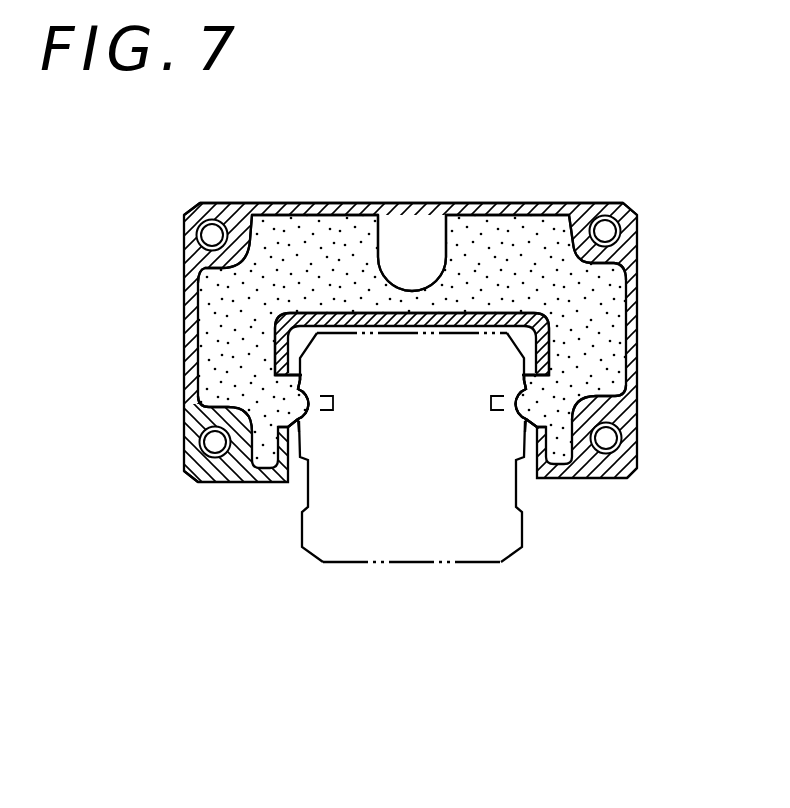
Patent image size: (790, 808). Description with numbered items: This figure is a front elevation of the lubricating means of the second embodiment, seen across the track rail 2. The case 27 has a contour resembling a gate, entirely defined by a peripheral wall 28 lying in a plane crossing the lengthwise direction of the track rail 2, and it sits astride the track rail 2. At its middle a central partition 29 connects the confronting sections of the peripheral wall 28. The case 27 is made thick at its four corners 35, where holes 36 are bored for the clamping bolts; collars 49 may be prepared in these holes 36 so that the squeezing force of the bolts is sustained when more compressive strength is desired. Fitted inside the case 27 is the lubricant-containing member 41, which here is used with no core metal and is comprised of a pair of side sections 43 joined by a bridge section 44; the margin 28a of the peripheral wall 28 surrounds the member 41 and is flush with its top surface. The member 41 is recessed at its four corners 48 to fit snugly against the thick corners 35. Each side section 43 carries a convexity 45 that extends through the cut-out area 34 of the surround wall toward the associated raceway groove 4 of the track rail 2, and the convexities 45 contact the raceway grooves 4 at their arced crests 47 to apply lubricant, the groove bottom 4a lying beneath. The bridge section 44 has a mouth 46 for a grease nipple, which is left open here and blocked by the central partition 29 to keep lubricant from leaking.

The track rail 2 is at (414, 520).
The raceway groove 4 is at (317, 388).
The groove bottom 4a is at (333, 404).
The case 27 is at (483, 203).
The peripheral wall 28 is at (188, 378).
The margin of the peripheral wall 28a is at (295, 215).
The central partition 29 is at (425, 203).
The cut-out area 34 is at (307, 380).
The thick corner 35 is at (192, 252).
The hole 36 is at (203, 222).
The lubricant-containing member 41 is at (228, 318).
The side section 43 is at (238, 338).
The bridge section 44 is at (343, 262).
The convexity 45 is at (317, 415).
The mouth 46 is at (380, 213).
The arced crest 47 is at (310, 427).
The recessed corner 48 is at (193, 270).
The collar 49 is at (218, 219).